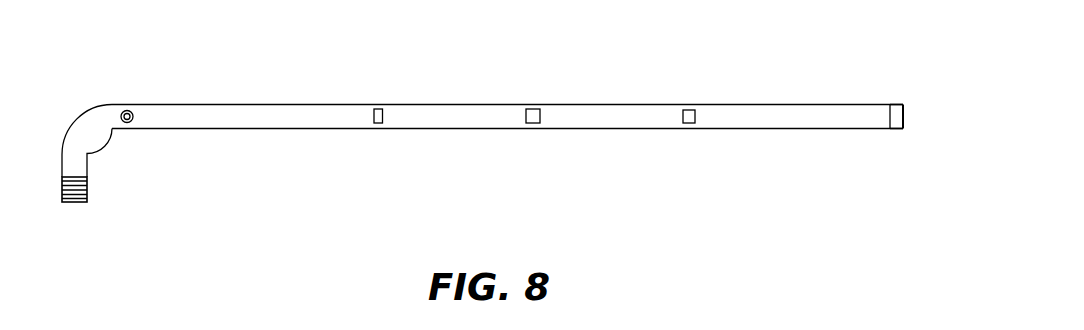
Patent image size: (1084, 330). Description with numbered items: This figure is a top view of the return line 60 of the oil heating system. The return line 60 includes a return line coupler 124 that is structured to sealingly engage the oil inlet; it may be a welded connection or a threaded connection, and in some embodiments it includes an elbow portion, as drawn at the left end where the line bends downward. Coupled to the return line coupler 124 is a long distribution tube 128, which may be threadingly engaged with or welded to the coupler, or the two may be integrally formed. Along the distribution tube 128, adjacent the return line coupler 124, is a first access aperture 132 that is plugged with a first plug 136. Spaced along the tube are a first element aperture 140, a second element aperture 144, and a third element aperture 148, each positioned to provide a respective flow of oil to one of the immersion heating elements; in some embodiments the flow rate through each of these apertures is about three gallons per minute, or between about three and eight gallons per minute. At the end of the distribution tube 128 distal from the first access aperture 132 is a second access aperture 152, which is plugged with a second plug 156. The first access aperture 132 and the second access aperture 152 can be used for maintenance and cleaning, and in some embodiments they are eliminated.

The return line 60 is at (766, 34).
The return line coupler 124 is at (87, 192).
The distribution tube 128 is at (427, 115).
The first access aperture 132 is at (127, 110).
The first plug 136 is at (127, 123).
The first element aperture 140 is at (378, 124).
The second element aperture 144 is at (531, 124).
The third element aperture 148 is at (689, 124).
The second access aperture 152 is at (890, 129).
The second plug 156 is at (896, 108).